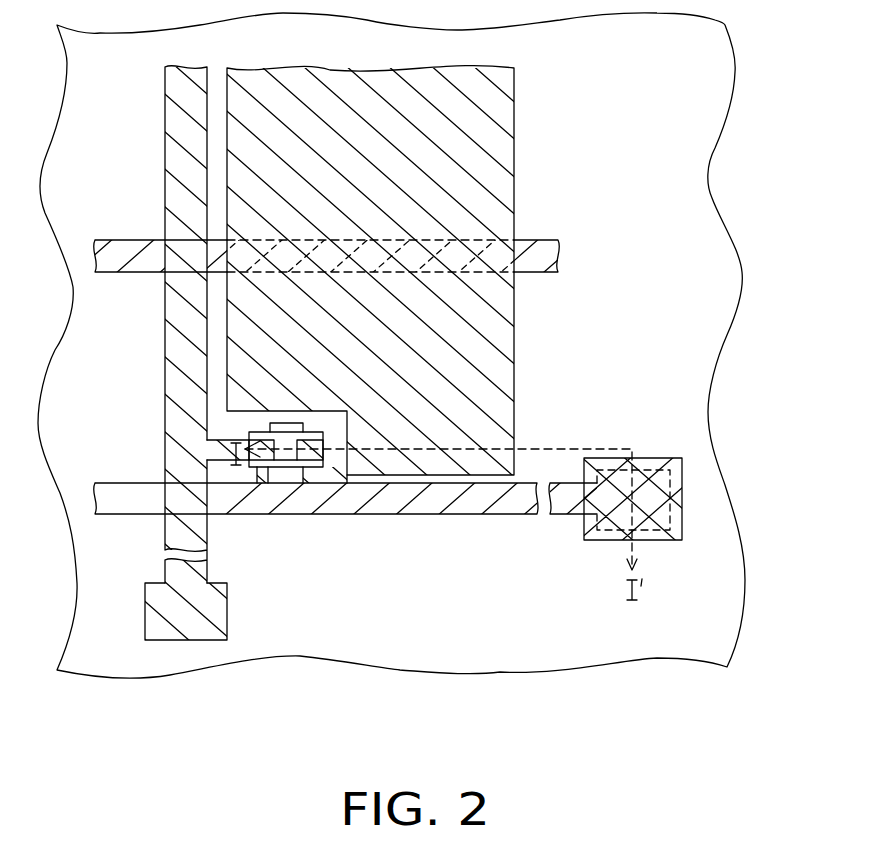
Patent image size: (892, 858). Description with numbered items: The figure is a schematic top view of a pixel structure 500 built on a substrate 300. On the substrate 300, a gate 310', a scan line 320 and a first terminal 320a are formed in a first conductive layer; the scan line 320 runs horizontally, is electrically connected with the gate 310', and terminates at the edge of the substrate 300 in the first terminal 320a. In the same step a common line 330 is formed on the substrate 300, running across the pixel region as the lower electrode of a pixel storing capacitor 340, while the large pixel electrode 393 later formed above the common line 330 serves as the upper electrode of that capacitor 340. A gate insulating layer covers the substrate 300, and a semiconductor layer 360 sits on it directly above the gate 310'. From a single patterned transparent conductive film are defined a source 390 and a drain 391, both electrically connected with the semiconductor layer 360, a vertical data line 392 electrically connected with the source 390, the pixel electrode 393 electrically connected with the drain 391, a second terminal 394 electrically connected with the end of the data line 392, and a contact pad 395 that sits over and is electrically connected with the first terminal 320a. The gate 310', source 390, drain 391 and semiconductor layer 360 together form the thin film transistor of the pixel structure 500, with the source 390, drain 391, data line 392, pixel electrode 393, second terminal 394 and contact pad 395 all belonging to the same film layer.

The substrate 300 is at (732, 602).
The gate 310' is at (307, 519).
The scan line 320 is at (467, 500).
The first terminal 320a is at (677, 497).
The common line 330 is at (478, 240).
The pixel storing capacitor 340 is at (312, 226).
The semiconductor layer 360 is at (285, 442).
The source 390 is at (262, 455).
The drain 391 is at (332, 453).
The data line 392 is at (177, 408).
The pixel electrode 393 is at (503, 313).
The second terminal 394 is at (220, 612).
The contact pad 395 is at (677, 472).
The pixel structure 500 is at (722, 706).